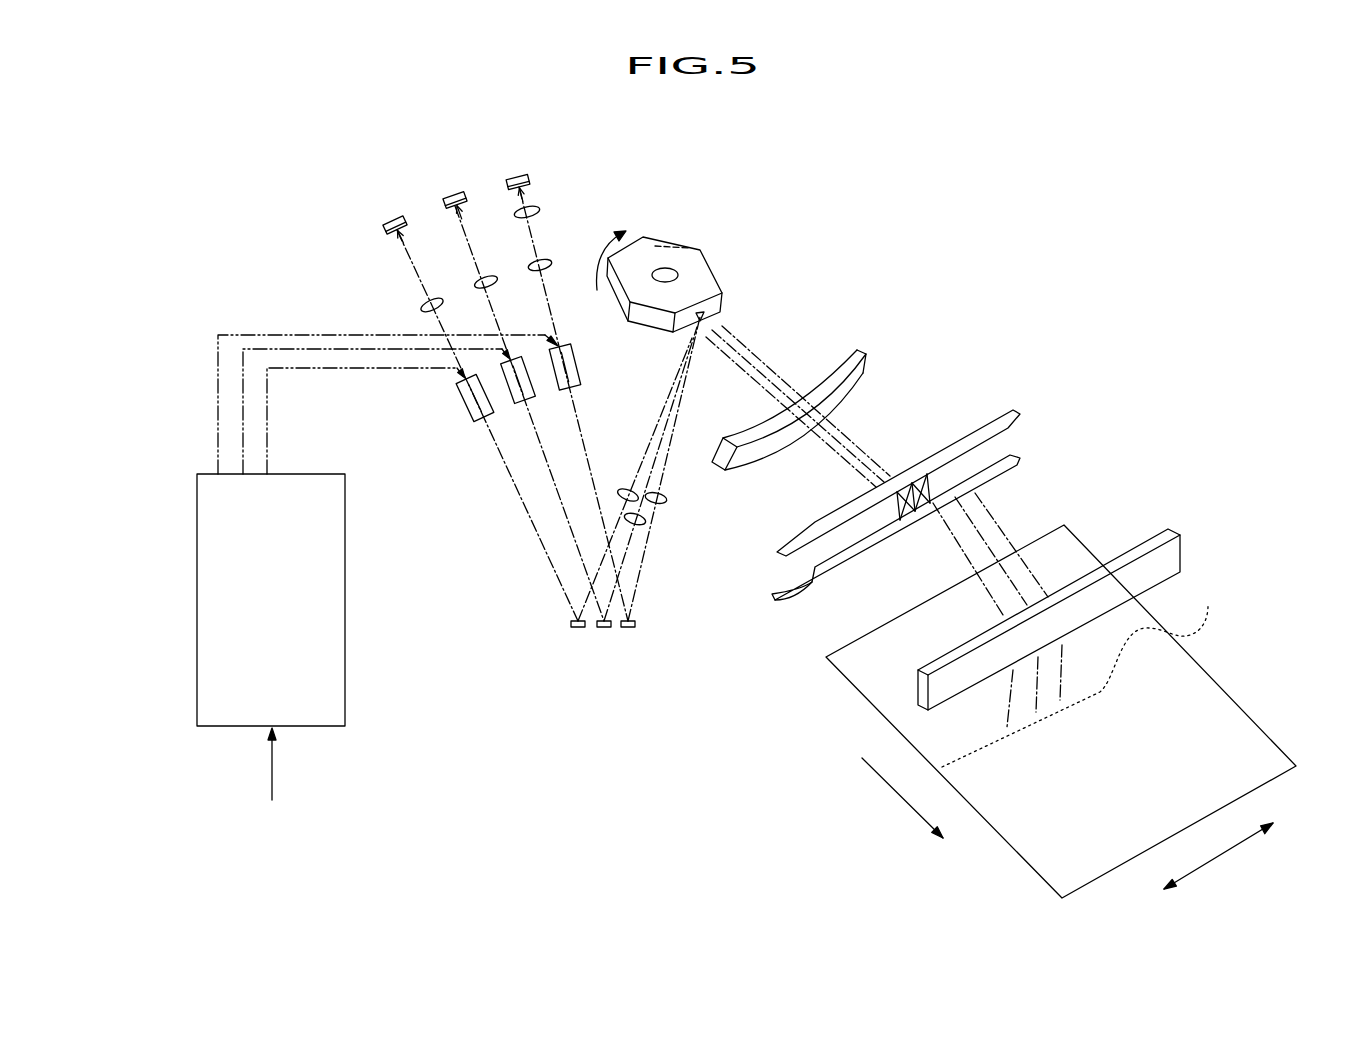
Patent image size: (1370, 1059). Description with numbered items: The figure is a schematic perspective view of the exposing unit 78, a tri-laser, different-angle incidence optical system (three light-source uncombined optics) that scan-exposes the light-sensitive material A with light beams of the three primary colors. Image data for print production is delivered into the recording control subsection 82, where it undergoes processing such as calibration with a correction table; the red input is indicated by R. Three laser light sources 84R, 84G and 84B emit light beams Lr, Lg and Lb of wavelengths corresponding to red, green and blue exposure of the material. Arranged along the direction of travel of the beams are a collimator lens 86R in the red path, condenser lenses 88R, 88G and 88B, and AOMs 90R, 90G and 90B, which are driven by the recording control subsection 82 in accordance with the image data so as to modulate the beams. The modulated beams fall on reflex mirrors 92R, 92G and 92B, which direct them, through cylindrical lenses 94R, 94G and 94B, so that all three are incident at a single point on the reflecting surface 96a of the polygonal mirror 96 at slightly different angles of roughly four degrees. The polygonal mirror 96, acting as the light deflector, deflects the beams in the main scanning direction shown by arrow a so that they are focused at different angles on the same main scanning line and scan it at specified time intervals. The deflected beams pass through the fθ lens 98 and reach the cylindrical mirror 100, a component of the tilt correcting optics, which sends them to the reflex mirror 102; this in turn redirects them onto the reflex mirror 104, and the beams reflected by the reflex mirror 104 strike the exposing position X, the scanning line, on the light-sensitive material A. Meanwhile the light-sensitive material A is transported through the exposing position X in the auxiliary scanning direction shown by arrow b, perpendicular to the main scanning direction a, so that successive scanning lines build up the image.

The exposing unit 78 is at (866, 210).
The recording control subsection 82 is at (345, 655).
The laser light source 84B is at (390, 222).
The laser light source 84G is at (456, 194).
The laser light source 84R is at (523, 174).
The collimator lens 86R is at (543, 211).
The condenser lens 88B is at (425, 302).
The condenser lens 88G is at (483, 282).
The condenser lens 88R is at (548, 268).
The AOM (acoustic optical modulator) 90B is at (463, 402).
The AOM (acoustic optical modulator) 90G is at (535, 398).
The AOM (acoustic optical modulator) 90R is at (578, 366).
The reflex mirror 92B is at (571, 626).
The reflex mirror 92G is at (602, 630).
The reflex mirror 92R is at (633, 630).
The cylindrical lens 94B is at (637, 487).
The cylindrical lens 94G is at (640, 525).
The cylindrical lens 94R is at (667, 498).
The polygonal mirror 96 is at (655, 258).
The reflecting surface 96a is at (717, 306).
The fθ lens 98 is at (863, 350).
The cylindrical mirror 100 is at (1003, 468).
The reflex mirror 102 is at (1010, 410).
The reflex mirror 104 is at (1149, 568).
The light-sensitive material A is at (1211, 733).
The exposing position (scanning line) X is at (1085, 672).
The main scanning direction a is at (1222, 851).
The auxiliary scanning direction b is at (895, 795).
The red light R is at (272, 776).
The light beam Lr is at (580, 436).
The light beam Lg is at (552, 485).
The light beam Lb is at (547, 537).